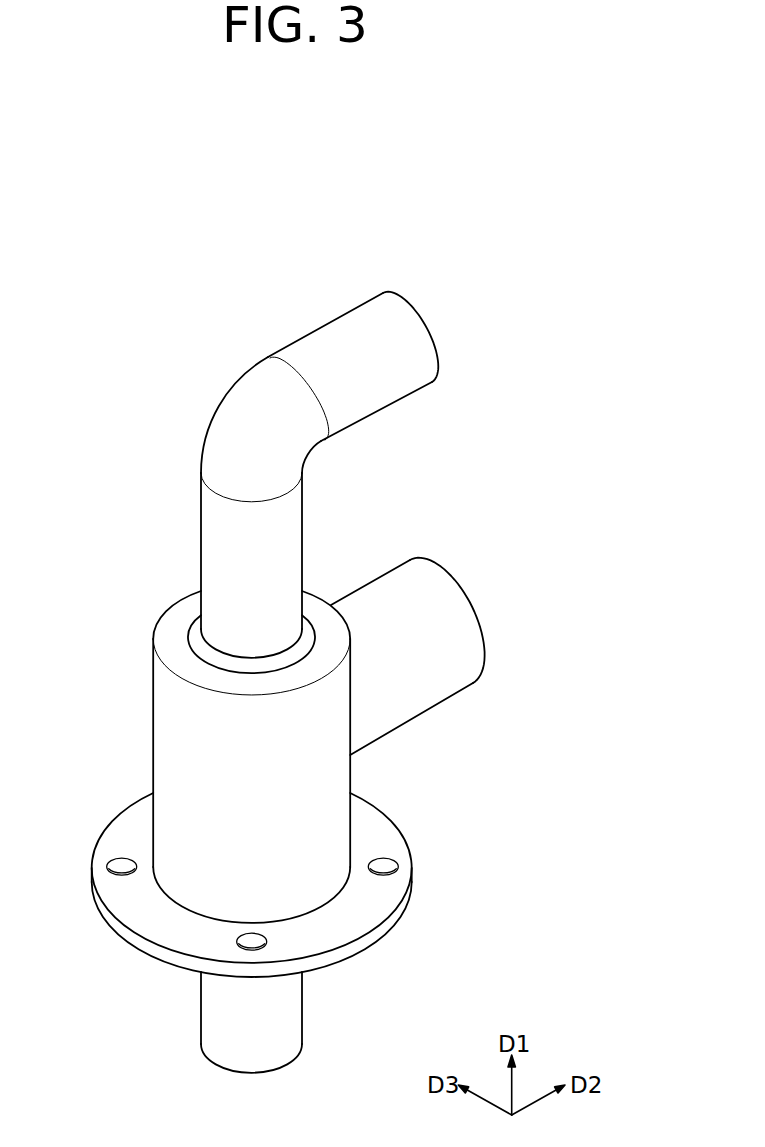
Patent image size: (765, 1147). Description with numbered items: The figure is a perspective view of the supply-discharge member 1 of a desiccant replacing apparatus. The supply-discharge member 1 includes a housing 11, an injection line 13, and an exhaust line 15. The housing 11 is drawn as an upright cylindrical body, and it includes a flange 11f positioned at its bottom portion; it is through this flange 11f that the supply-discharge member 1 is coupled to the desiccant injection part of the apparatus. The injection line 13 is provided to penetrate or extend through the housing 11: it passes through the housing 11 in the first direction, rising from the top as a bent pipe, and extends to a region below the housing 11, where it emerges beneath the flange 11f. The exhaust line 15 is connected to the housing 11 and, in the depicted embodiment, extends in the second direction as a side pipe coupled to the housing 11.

The supply-discharge member 1 is at (507, 250).
The housing 11 is at (167, 747).
The flange 11f is at (130, 828).
The injection line 13 is at (242, 402).
The exhaust line 15 is at (470, 636).